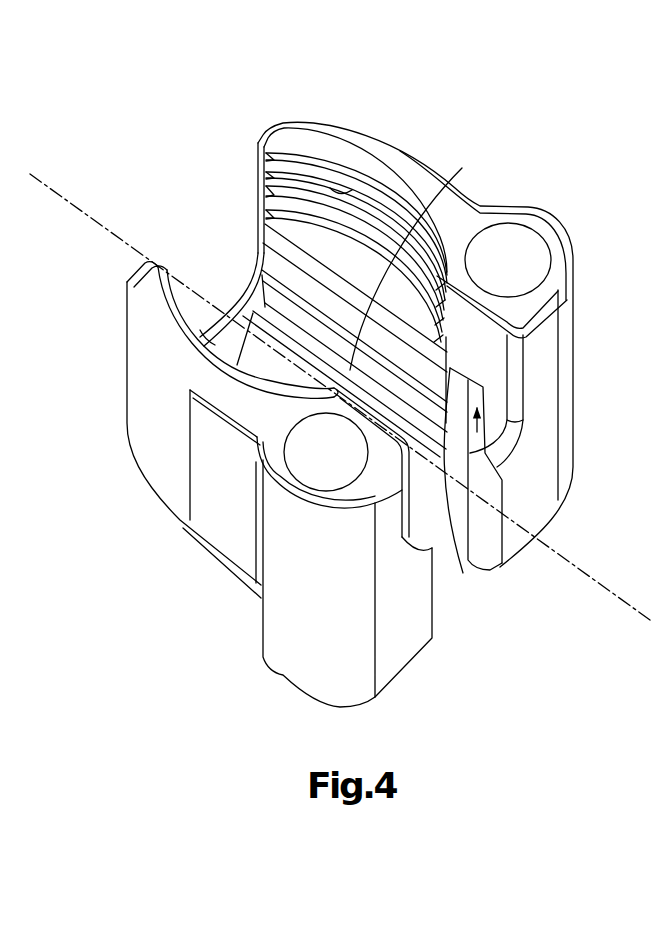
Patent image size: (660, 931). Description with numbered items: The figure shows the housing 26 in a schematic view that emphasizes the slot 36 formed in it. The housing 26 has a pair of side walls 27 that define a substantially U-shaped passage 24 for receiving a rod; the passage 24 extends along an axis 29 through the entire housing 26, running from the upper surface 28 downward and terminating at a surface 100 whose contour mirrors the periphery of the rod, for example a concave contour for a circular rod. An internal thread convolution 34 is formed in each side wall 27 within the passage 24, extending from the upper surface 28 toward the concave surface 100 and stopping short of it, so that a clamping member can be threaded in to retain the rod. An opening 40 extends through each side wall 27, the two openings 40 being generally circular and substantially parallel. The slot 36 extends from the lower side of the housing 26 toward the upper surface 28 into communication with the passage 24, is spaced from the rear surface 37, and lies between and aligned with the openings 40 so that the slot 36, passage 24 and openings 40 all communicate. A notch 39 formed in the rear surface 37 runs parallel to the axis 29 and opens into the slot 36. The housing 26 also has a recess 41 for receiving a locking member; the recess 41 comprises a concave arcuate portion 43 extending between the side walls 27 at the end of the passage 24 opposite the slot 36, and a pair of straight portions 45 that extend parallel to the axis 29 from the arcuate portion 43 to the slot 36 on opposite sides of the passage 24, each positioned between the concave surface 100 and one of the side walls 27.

The passage 24 is at (284, 253).
The housing 26 is at (178, 522).
The side walls 27 is at (395, 163).
The upper surface 28 is at (466, 228).
The axis 29 is at (70, 195).
The internal thread convolution 34 is at (325, 193).
The slot 36 is at (497, 467).
The rear surface 37 is at (393, 643).
The notch 39 is at (450, 605).
The openings 40 is at (521, 252).
The recess 41 is at (250, 308).
The arcuate portion 43 is at (210, 335).
The straight portions 45 is at (458, 188).
The concave surface 100 is at (463, 573).